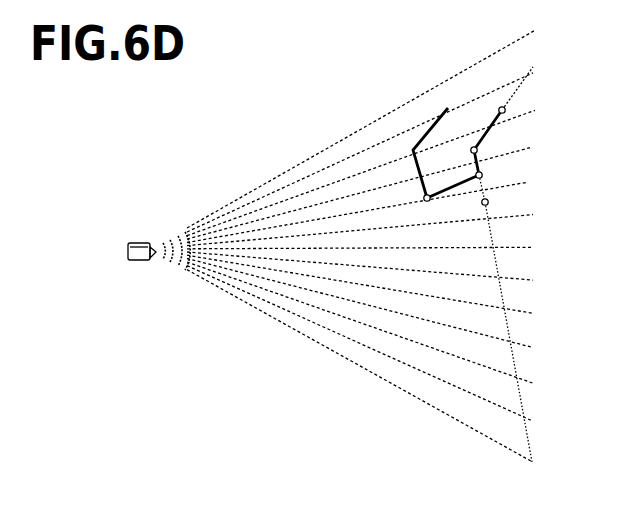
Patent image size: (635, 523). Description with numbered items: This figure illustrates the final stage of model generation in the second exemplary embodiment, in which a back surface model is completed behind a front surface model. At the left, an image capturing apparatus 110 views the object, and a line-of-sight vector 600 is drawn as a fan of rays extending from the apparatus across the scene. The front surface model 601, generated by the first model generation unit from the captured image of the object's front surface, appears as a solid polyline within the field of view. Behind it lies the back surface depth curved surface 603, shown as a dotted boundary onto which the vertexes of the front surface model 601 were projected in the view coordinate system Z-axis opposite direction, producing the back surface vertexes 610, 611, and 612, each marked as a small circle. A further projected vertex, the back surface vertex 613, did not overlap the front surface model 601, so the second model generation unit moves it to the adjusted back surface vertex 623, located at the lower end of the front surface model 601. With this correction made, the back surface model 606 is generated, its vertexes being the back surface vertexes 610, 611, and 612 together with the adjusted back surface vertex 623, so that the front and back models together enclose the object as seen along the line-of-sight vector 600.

The image capturing apparatus 110 is at (128, 257).
The line-of-sight vector 600 is at (248, 198).
The front surface model 601 is at (423, 124).
The back surface depth curved surface 603 is at (515, 92).
The back surface model 606 is at (460, 186).
The back surface vertex 610 is at (505, 108).
The back surface vertex 611 is at (478, 148).
The back surface vertex 612 is at (484, 172).
The back surface vertex 613 is at (489, 201).
The adjusted back surface vertex 623 is at (427, 202).